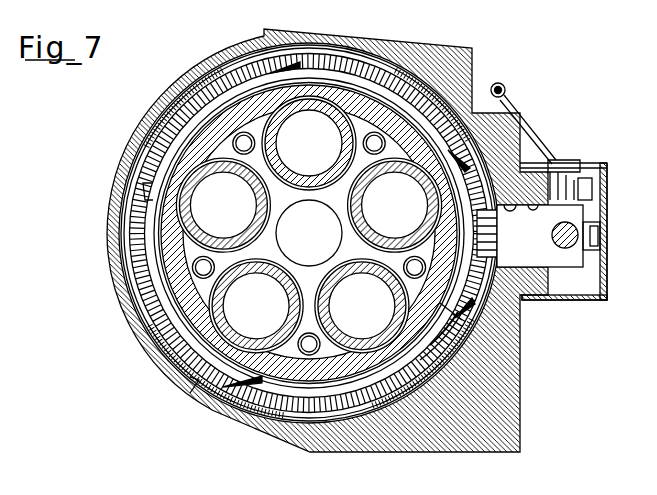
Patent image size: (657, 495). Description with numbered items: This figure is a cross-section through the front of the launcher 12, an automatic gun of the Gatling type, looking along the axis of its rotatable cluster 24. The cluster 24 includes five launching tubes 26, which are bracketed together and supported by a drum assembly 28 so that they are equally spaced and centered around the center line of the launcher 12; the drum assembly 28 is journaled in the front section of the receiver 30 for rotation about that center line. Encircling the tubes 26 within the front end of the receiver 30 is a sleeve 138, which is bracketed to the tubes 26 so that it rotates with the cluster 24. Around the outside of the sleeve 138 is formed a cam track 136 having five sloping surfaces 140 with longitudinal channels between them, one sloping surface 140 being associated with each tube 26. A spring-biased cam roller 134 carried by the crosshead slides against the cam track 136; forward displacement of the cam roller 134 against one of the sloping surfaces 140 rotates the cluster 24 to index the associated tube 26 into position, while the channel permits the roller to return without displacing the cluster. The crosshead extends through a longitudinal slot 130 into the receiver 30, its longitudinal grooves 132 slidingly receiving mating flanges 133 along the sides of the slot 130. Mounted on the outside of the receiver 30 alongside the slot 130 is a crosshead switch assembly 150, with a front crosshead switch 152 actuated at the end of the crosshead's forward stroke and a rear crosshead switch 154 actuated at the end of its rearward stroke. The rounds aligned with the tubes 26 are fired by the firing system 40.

The launcher 12 is at (113, 152).
The rotatable cluster 24 is at (140, 268).
The launching tubes 26 is at (347, 225).
The drum assembly 28 is at (327, 360).
The receiver 30 is at (150, 345).
The firing system 40 is at (583, 303).
The longitudinal slot 130 is at (499, 199).
The longitudinal grooves 132 is at (548, 236).
The mating flanges 133 is at (546, 249).
The spring-biased cam roller 134 is at (463, 306).
The cam track 136 is at (446, 338).
The sleeve 138 is at (386, 393).
The sloping surfaces 140 is at (453, 360).
The crosshead switch assembly 150 is at (596, 173).
The front crosshead switch 152 is at (590, 200).
The rear crosshead switch 154 is at (582, 209).